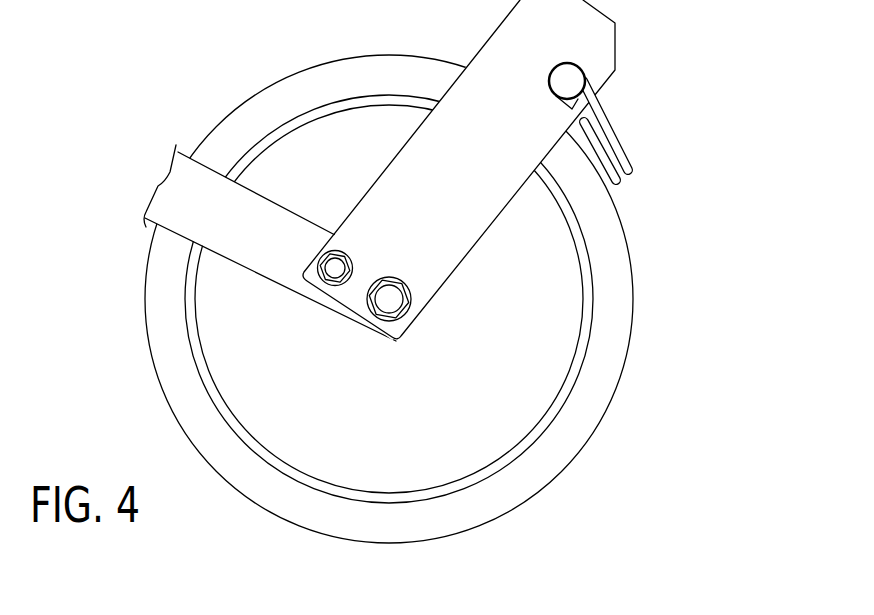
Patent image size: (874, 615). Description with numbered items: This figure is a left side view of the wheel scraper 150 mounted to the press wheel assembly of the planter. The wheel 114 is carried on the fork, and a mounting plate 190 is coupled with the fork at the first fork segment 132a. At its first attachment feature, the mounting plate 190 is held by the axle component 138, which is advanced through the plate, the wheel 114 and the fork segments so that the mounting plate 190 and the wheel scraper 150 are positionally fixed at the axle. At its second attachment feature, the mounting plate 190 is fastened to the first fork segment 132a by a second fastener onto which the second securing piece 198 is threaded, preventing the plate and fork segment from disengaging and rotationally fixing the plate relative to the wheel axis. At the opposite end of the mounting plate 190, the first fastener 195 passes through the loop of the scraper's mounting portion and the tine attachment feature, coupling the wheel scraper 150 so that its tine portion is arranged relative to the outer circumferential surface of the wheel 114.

The wheel 114 is at (530, 512).
The first fork segment 132a is at (183, 187).
The axle component 138 is at (393, 302).
The wheel scraper 150 is at (649, 105).
The mounting plate 190 is at (480, 48).
The first fastener 195 is at (572, 75).
The second securing piece 198 is at (313, 277).